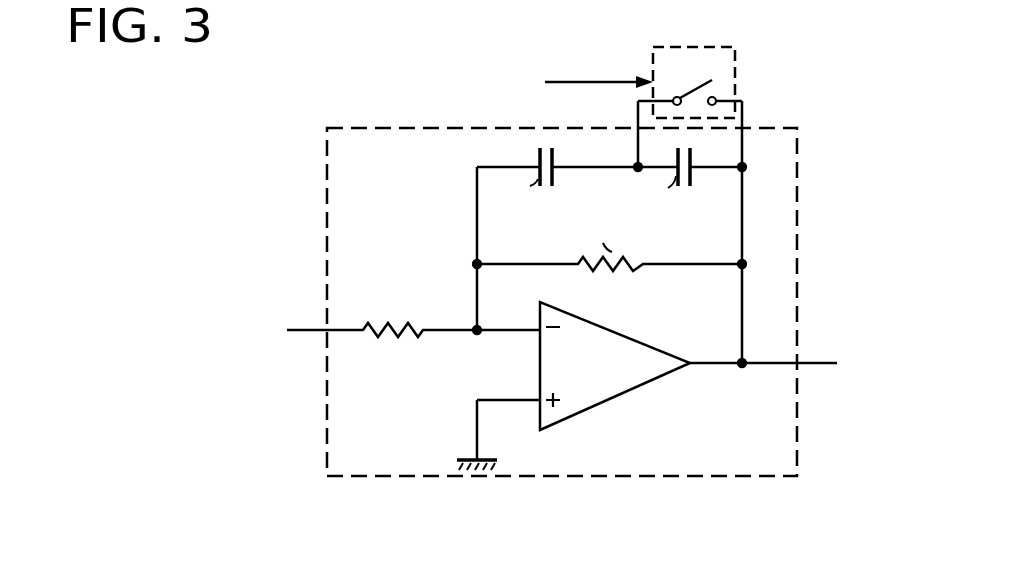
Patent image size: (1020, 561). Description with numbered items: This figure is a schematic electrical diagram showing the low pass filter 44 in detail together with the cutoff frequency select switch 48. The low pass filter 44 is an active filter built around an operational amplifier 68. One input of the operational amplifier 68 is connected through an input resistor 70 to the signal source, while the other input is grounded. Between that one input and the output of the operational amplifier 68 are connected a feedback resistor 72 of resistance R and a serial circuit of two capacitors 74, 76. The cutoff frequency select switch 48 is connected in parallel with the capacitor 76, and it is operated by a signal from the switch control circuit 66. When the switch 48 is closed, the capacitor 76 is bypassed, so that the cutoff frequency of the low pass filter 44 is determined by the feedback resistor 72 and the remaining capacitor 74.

The low pass filter 44 is at (798, 193).
The cutoff frequency select switch 48 is at (737, 87).
The switch control circuit 66 is at (493, 84).
The operational amplifier 68 is at (642, 390).
The input resistor 70 is at (397, 316).
The feedback resistor 72 is at (628, 272).
The capacitor 74 is at (537, 158).
The capacitor 76 is at (693, 162).